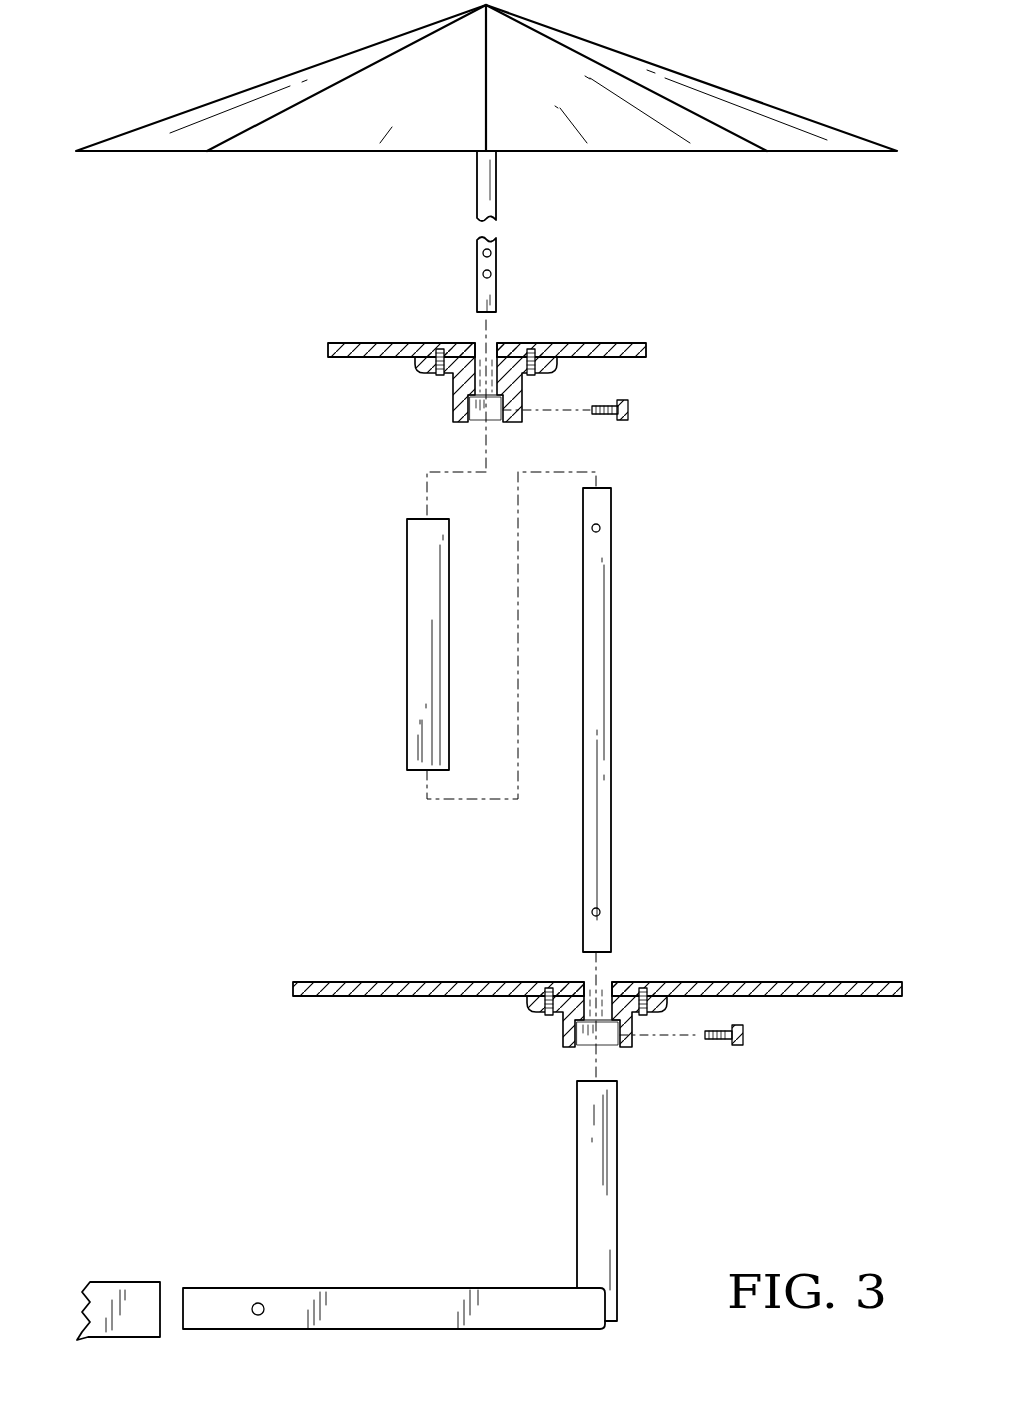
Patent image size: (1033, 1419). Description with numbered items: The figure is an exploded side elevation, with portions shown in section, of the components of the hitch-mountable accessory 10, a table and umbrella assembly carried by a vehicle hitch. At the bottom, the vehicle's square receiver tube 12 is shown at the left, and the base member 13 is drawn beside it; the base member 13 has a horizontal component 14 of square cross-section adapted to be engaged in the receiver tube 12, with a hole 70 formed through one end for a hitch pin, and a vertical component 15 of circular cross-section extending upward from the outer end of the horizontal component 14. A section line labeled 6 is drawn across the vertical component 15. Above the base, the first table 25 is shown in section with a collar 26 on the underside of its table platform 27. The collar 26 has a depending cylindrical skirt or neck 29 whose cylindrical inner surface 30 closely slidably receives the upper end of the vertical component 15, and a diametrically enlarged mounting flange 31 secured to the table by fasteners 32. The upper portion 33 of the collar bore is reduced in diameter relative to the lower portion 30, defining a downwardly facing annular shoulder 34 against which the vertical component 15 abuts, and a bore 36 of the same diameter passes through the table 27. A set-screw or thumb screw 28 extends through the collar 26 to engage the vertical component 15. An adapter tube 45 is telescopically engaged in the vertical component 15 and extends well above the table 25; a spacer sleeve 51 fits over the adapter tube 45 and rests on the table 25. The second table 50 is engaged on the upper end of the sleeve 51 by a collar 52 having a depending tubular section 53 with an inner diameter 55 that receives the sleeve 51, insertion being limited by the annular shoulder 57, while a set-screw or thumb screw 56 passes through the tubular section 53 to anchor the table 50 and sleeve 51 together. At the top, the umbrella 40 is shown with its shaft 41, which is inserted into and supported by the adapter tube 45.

The umbrella 40 is at (732, 156).
The shaft of the umbrella 41 is at (473, 207).
The second table 50 is at (622, 327).
The collar 52 is at (443, 383).
The depending tubular section 53 is at (523, 393).
The inner diameter 55 is at (477, 417).
The annular shoulder 57 is at (494, 405).
The set-screw or thumb screw 56 is at (627, 420).
The spacer sleeve 51 is at (407, 672).
The adapter tube 45 is at (611, 832).
The first table 25 is at (768, 977).
The table platform 27 is at (405, 982).
The collar 26 is at (636, 1050).
The opening or bore 36 is at (590, 982).
The upper portion of the bore 33 is at (602, 988).
The mounting flange 31 is at (527, 1002).
The fasteners 32 is at (547, 1010).
The cylindrical skirt or neck 29 is at (563, 1037).
The cylindrical inner surface 30 is at (588, 1050).
The annular shoulder 34 is at (603, 1047).
The set-screw or thumb screw 28 is at (745, 1035).
The vertical component 15 is at (617, 1150).
The hitch-mountable accessory 10 is at (754, 1136).
The horizontal component 14 is at (385, 1288).
The base member 13 is at (474, 1279).
The hole 70 is at (263, 1303).
The receiver tube 12 is at (148, 1282).
The section line 6- 6 is at (635, 1278).